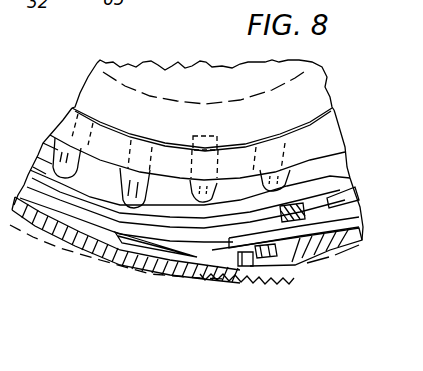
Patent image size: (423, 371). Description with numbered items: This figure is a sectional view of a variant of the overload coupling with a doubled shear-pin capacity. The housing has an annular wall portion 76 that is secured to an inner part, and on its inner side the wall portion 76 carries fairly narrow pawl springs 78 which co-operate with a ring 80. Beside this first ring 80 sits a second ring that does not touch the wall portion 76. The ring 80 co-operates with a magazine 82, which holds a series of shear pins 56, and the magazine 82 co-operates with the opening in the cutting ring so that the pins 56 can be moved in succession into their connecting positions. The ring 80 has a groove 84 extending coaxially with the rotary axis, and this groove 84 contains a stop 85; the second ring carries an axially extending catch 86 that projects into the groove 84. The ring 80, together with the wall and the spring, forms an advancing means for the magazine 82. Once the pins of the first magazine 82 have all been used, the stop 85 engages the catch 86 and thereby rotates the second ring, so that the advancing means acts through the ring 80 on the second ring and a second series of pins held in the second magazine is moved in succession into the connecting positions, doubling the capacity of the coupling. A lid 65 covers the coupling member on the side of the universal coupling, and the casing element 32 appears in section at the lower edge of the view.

The casing 32 is at (295, 266).
The shear pin 56 is at (109, 189).
The lid 65 is at (199, 70).
The annular wall portion 76 is at (72, 245).
The pawl springs 78 is at (190, 270).
The ring 80 is at (348, 163).
The magazine 82 is at (336, 118).
The groove 84 is at (37, 163).
The stop 85 is at (353, 181).
The catch 86 is at (290, 206).